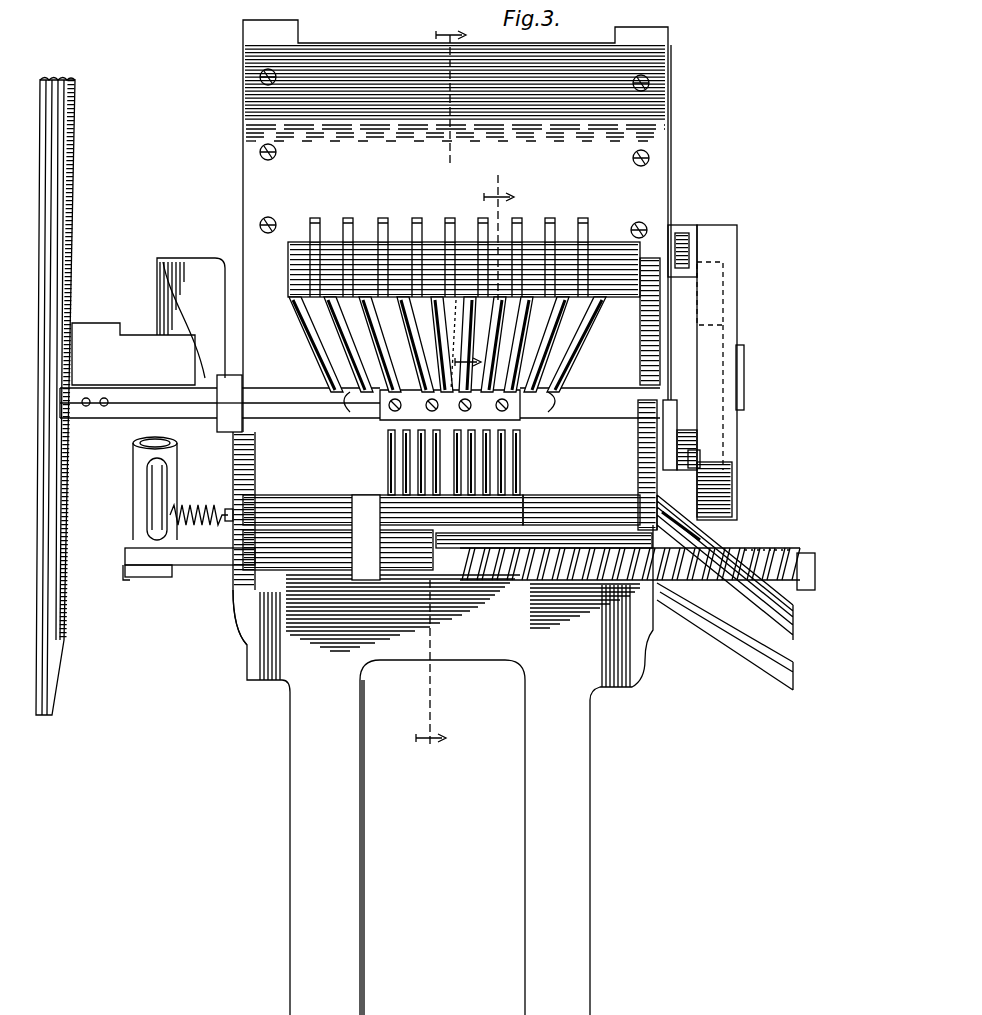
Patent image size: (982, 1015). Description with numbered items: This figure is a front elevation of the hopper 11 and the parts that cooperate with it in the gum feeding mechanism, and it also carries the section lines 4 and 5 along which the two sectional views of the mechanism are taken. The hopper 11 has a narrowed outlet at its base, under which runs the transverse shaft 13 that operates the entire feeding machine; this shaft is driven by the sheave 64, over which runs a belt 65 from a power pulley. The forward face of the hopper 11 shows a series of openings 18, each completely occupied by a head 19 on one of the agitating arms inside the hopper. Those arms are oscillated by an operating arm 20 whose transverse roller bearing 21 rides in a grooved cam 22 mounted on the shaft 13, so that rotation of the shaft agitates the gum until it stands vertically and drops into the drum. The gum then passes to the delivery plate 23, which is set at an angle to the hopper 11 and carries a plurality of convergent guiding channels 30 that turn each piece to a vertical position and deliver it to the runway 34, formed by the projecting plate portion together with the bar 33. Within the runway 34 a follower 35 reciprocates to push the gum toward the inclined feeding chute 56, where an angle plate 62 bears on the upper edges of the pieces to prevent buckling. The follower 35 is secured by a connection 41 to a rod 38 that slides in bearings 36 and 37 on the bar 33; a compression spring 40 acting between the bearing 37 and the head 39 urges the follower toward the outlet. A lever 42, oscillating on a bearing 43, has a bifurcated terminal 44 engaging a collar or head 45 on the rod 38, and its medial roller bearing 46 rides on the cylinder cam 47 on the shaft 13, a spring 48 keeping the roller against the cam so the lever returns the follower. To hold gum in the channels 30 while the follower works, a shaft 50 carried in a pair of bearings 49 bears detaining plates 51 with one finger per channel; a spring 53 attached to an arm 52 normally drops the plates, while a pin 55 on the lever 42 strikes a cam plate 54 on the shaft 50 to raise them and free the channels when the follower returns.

The section line 4— 4 is at (441, 389).
The section line 5— 5 is at (484, 274).
The hopper 11 is at (585, 122).
The shaft 13 is at (132, 355).
The openings 18 is at (515, 218).
The head 19 is at (486, 220).
The operating arm 20 is at (683, 240).
The roller bearing 21 is at (702, 287).
The grooved cam 22 is at (740, 348).
The delivery plate 23 is at (555, 358).
The guiding channels 30 is at (340, 350).
The bar 33 is at (326, 572).
The runway 34 is at (548, 505).
The follower 35 is at (322, 500).
The bearing 36 is at (250, 600).
The bearing 37 is at (455, 586).
The rod 38 is at (197, 566).
The head 39 is at (805, 556).
The spring 40 is at (766, 548).
The connection 41 is at (362, 582).
The lever 42 is at (160, 487).
The bearing 43 is at (143, 470).
The bifurcated terminal 44 is at (150, 578).
The collar or head 45 is at (125, 574).
The roller bearing 46 is at (145, 458).
The cylinder cam 47 is at (197, 268).
The spring 48 is at (198, 524).
The bearings 49 is at (244, 388).
The shaft 50 is at (298, 420).
The detaining plates 51 is at (388, 445).
The arm 52 is at (672, 428).
The spring 53 is at (700, 470).
The cam plate 54 is at (105, 428).
The pin 55 is at (150, 508).
The feeding chute 56 is at (732, 617).
The angle plate 62 is at (700, 542).
The sheave 64 is at (70, 85).
The belt 65 is at (62, 150).